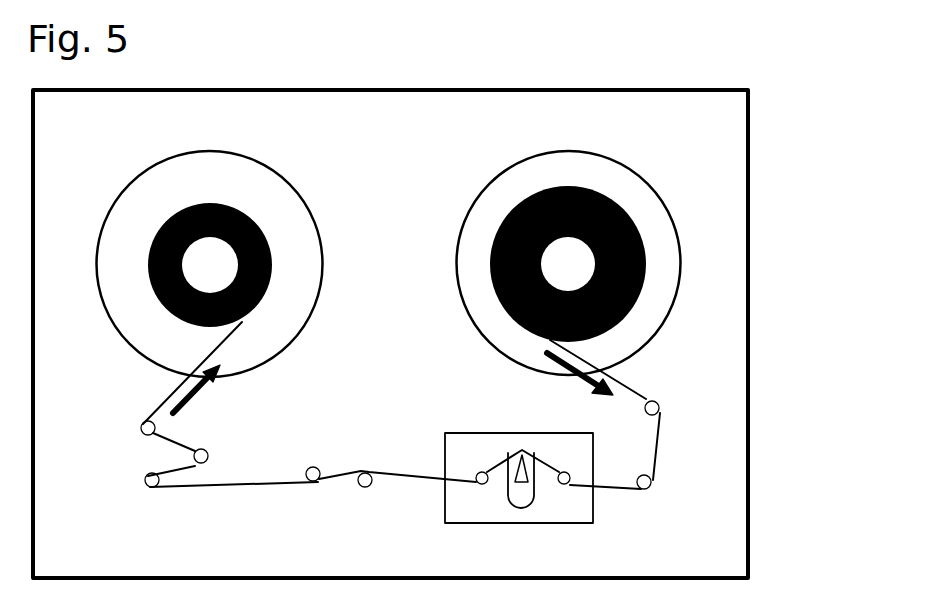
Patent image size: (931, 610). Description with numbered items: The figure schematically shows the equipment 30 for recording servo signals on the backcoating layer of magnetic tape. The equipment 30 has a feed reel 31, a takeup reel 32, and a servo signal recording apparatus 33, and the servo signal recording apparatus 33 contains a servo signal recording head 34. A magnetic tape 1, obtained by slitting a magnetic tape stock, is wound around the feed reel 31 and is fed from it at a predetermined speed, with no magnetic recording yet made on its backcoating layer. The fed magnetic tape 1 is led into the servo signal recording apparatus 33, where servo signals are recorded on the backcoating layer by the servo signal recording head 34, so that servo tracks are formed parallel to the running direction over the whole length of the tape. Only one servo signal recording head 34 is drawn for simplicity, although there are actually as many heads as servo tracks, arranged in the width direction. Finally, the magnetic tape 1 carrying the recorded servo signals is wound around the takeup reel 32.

The equipment 30 is at (780, 115).
The feed reel 31 is at (640, 172).
The takeup reel 32 is at (298, 181).
The magnetic tape 1 is at (645, 393).
The servo signal recording apparatus 33 is at (447, 458).
The servo signal recording head 34 is at (535, 490).